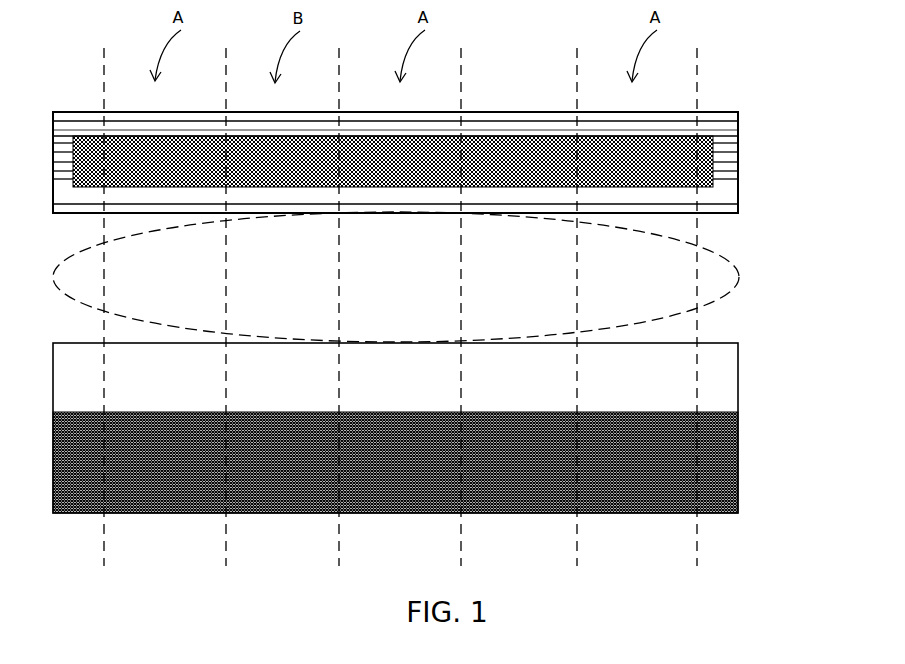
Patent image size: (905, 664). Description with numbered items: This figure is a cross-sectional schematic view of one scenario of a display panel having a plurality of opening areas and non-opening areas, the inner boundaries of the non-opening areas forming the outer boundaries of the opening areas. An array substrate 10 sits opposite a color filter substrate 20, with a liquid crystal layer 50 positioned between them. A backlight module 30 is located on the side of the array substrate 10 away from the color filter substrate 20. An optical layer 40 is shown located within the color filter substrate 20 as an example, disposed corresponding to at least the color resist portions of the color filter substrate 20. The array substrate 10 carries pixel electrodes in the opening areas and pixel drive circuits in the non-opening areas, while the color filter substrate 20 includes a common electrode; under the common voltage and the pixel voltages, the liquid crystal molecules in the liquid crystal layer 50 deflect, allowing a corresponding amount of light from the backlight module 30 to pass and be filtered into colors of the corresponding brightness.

The array substrate 10 is at (718, 380).
The color filter substrate 20 is at (720, 128).
The backlight module 30 is at (738, 457).
The optical layer 40 is at (713, 148).
The liquid crystal layer 50 is at (718, 278).